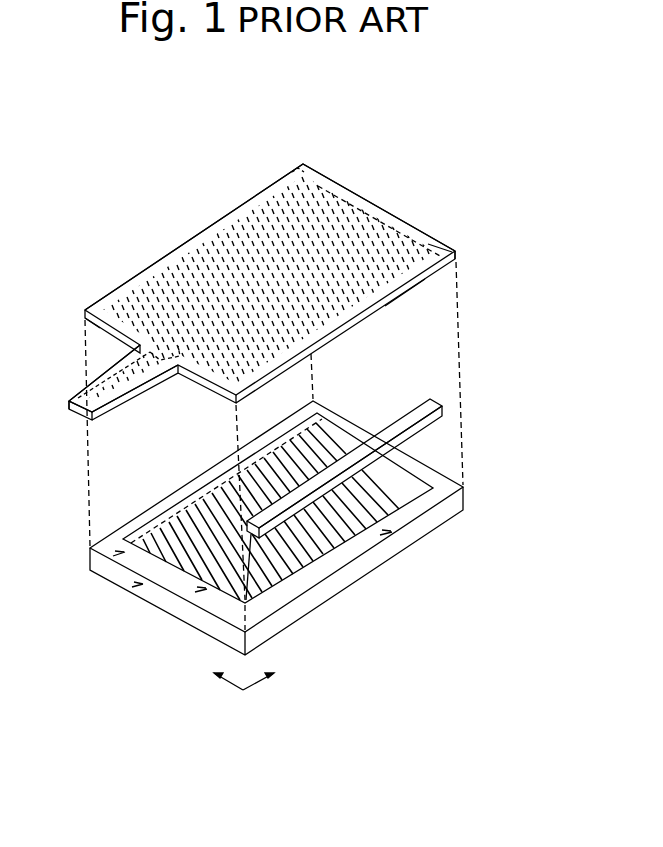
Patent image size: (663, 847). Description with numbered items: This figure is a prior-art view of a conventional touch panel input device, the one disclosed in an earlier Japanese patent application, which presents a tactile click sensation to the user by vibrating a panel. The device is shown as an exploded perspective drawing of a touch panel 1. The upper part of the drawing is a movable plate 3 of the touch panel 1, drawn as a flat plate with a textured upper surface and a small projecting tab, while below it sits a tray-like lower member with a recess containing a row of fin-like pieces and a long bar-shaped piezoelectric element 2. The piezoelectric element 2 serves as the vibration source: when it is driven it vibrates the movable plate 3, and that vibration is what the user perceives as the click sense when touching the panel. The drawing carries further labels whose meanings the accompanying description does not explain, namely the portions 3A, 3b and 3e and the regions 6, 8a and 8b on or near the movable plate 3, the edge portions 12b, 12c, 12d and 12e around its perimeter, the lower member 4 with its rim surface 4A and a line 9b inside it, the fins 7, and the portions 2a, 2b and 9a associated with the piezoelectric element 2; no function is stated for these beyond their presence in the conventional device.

The touch panel 1 is at (326, 150).
The movable plates 3 is at (271, 285).
The textured surface of upper plate 3e is at (220, 263).
The edge of upper plate 3A is at (380, 207).
The tab of upper plate 3b is at (113, 407).
The corner region 6 is at (283, 178).
The wavy region on upper plate 8a is at (340, 190).
The wavy region on tab 8b is at (90, 352).
The edge portion 12e is at (440, 247).
The edge portion 12c is at (455, 250).
The edge portion 12d is at (88, 333).
The edge portion 12b is at (86, 381).
The base 4 is at (283, 528).
The rim surface of base 4A is at (220, 467).
The inner rim line 9b is at (153, 505).
The fins 7 is at (345, 538).
The piezoelectric element 2 is at (384, 449).
The top face of bar block 2a is at (437, 421).
The front edge of bar block 9a is at (350, 467).
The side of bar block 2b is at (398, 424).